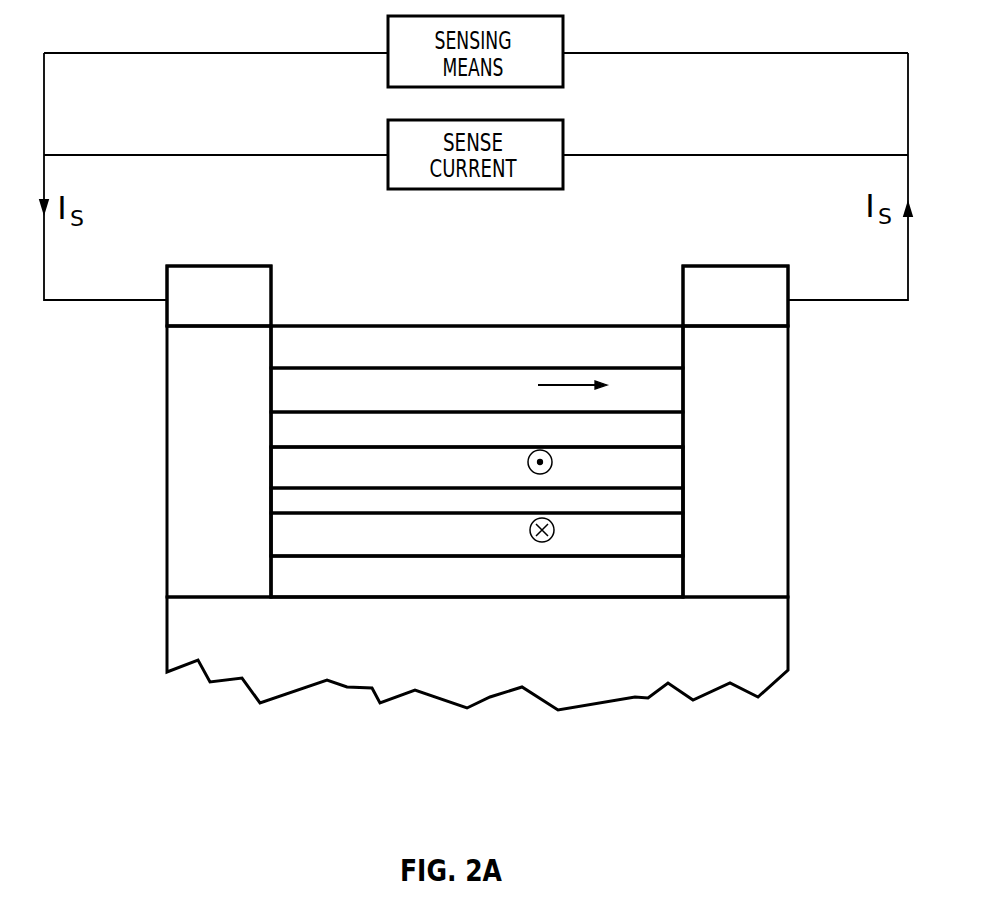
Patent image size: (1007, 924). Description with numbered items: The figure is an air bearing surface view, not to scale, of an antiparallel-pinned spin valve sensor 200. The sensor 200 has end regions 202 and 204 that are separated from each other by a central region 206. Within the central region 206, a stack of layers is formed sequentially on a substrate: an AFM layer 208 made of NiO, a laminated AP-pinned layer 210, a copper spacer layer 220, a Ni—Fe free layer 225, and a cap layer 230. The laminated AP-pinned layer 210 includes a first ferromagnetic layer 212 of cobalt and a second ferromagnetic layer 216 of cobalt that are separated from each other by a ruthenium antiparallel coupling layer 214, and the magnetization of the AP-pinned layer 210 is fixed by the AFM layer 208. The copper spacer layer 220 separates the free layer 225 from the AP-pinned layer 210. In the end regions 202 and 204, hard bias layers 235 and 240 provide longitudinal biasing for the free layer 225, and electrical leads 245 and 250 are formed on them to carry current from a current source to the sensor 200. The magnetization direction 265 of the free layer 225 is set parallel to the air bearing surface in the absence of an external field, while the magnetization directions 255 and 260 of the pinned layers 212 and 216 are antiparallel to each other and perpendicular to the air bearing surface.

The AP-pinned SV sensor 200 is at (274, 747).
The end region 202 is at (166, 258).
The end region 204 is at (685, 258).
The central region 206 is at (675, 258).
The AFM layer 208 is at (652, 582).
The laminated AP-pinned layer 210 is at (268, 447).
The first ferromagnetic layer 212 is at (662, 532).
The ruthenium antiparallel coupling layer 214 is at (662, 498).
The second ferromagnetic layer 216 is at (662, 463).
The copper spacer layer 220 is at (657, 428).
The free layer 225 is at (652, 388).
The cap layer 230 is at (638, 349).
The hard bias layer 235 is at (190, 408).
The hard bias layer 240 is at (777, 350).
The electrical lead 245 is at (165, 314).
The electrical lead 250 is at (788, 306).
The magnetization direction 255 is at (553, 537).
The magnetization direction 260 is at (539, 450).
The magnetization direction 265 is at (567, 384).